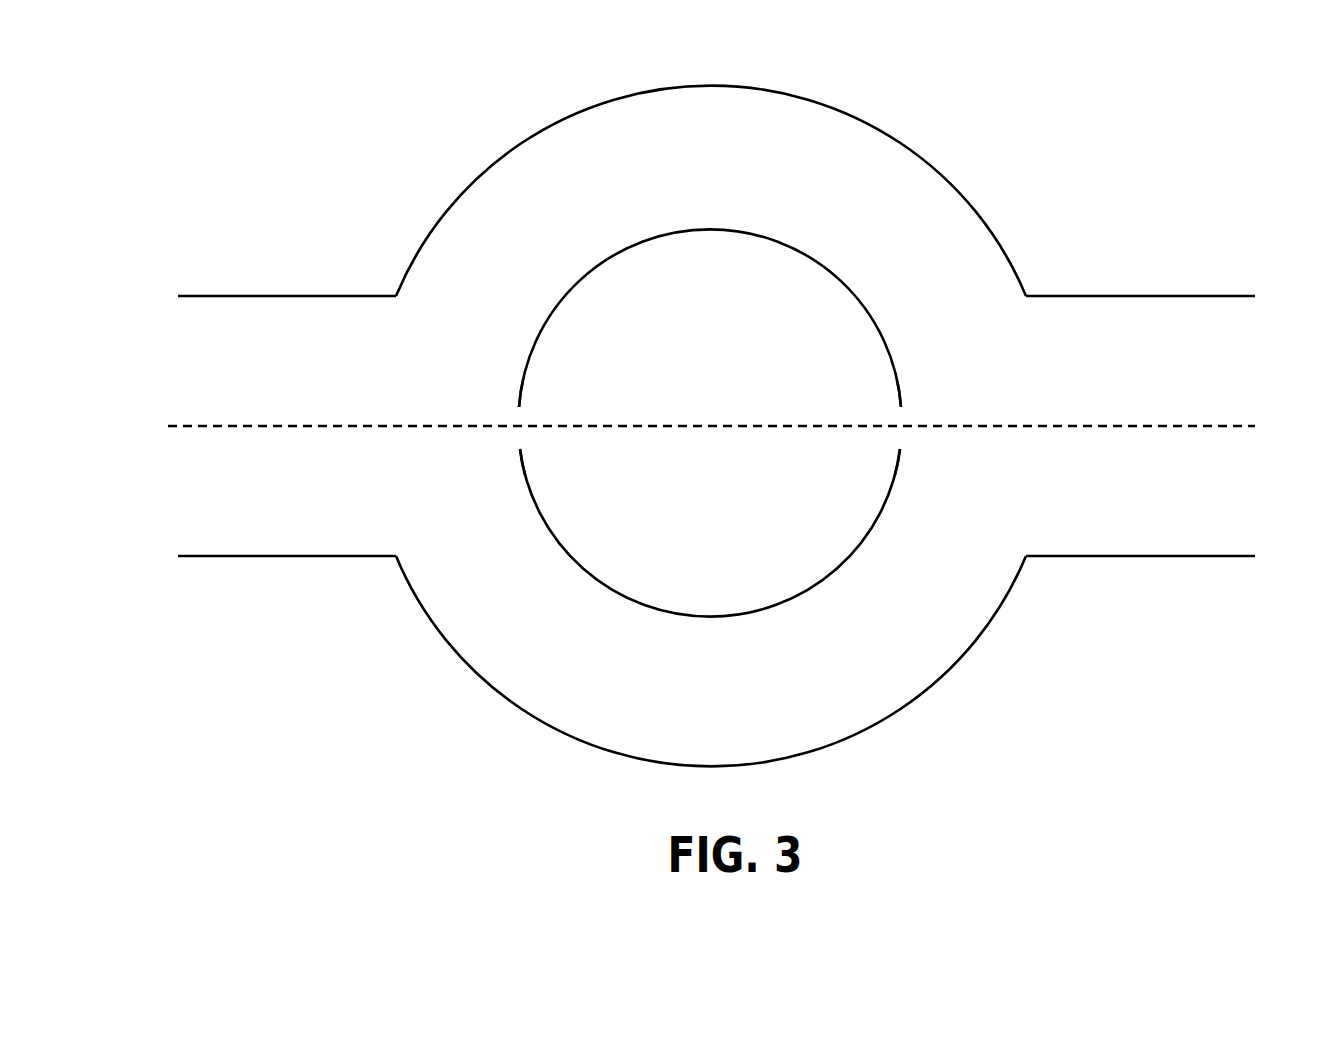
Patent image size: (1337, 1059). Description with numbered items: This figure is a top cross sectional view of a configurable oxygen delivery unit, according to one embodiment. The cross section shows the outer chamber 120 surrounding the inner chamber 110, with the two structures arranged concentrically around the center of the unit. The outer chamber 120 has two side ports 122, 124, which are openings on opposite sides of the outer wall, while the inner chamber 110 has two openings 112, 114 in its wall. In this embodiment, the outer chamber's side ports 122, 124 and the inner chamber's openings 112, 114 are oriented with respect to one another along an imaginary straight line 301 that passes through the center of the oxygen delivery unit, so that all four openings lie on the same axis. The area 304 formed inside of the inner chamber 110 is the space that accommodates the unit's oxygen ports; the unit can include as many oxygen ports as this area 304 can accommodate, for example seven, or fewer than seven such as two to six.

The inner chamber 110 is at (565, 303).
The opening 112 is at (518, 409).
The opening 114 is at (898, 418).
The outer chamber 120 is at (965, 193).
The side port 122 is at (255, 558).
The side port 124 is at (1157, 556).
The imaginary straight line 301 is at (1157, 425).
The area 304 is at (678, 509).